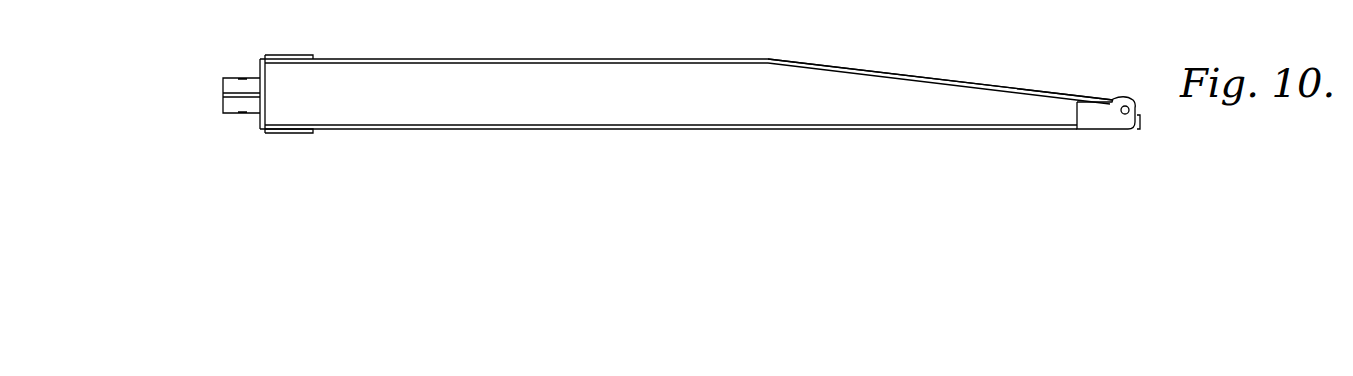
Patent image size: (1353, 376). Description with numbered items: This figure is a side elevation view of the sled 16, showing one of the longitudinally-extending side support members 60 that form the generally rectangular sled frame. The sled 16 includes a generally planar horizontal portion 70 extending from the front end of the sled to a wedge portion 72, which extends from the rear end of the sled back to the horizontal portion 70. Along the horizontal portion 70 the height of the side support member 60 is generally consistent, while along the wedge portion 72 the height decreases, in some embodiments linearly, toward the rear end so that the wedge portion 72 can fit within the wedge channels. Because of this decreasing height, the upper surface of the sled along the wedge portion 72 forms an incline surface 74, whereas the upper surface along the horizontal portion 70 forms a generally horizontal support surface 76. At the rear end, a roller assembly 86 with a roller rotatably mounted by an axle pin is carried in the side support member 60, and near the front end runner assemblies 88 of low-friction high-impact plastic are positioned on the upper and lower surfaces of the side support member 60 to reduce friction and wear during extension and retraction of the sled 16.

The sled 16 is at (205, 37).
The side support member 60 is at (775, 110).
The horizontal portion 70 is at (588, 112).
The wedge portion 72 is at (992, 112).
The incline surface 74 is at (920, 58).
The horizontal support surface 76 is at (568, 45).
The roller assembly 86 is at (1132, 102).
The runner assembly 88 is at (285, 56).